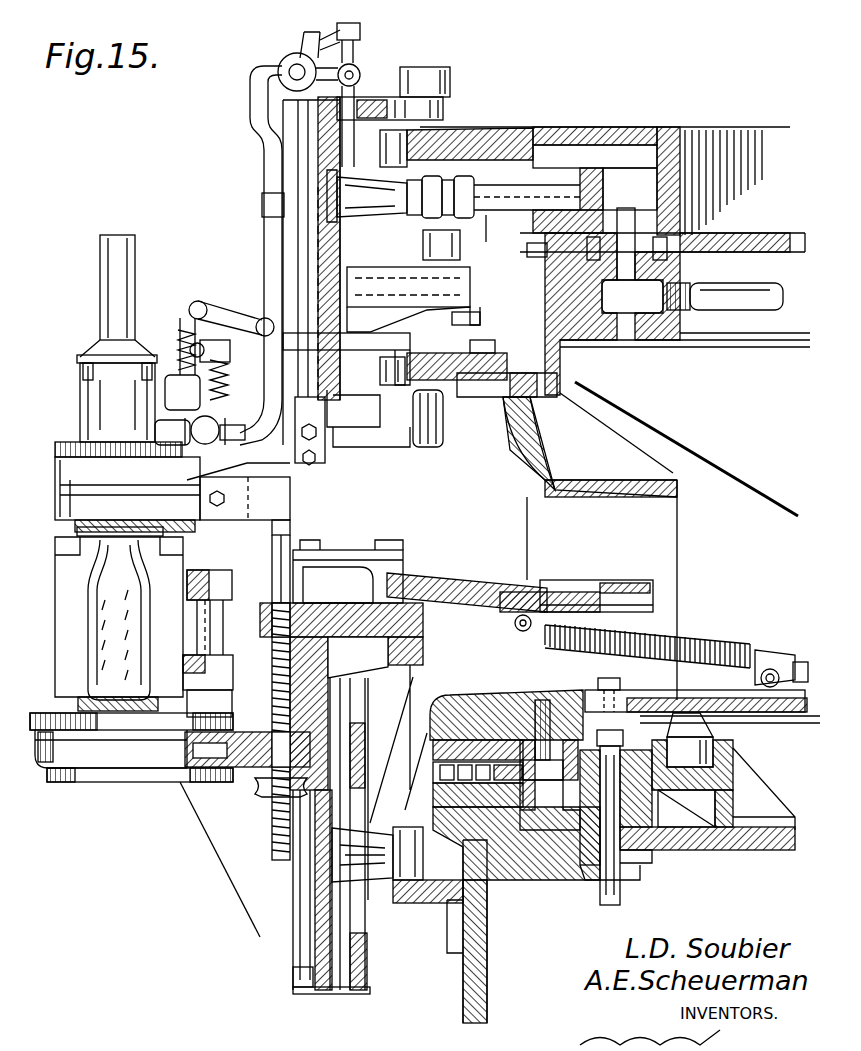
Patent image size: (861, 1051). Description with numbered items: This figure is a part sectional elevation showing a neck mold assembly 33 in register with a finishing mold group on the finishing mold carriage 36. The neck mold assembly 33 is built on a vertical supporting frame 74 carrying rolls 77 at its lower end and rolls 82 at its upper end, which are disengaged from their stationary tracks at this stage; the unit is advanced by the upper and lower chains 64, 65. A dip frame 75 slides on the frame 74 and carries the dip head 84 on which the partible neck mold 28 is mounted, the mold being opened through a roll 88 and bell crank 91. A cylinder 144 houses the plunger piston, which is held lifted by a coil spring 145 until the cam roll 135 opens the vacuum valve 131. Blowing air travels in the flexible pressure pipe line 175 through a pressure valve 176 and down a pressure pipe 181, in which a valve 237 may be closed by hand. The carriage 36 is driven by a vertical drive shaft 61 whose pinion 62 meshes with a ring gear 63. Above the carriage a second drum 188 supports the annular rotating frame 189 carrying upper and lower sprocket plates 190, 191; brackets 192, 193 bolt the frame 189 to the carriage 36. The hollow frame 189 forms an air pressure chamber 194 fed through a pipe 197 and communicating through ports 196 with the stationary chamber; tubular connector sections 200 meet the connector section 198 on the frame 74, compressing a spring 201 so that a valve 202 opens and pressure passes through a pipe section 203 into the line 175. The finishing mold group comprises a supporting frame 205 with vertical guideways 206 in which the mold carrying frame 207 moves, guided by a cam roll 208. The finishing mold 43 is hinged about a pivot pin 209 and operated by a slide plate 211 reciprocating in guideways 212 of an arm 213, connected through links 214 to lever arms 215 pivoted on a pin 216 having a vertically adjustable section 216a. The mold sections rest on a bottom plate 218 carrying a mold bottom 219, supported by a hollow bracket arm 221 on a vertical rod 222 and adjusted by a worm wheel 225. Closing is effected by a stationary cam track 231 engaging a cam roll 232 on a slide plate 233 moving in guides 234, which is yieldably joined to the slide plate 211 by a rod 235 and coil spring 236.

The pressure valve 176 is at (290, 60).
The pressure pipe line 175 is at (352, 66).
The rolls 82 is at (447, 70).
The pipe section 203 is at (390, 99).
The upper sprocket plate 190 is at (447, 128).
The annular rotating frame 189 is at (560, 126).
The annular air pressure chamber 194 is at (635, 160).
The valve 202 is at (595, 177).
The ports 196 is at (626, 225).
The dip frame 75 is at (280, 142).
The upper chain 64 is at (381, 148).
The pressure pipe 181 is at (278, 173).
The supporting frame 74 is at (322, 236).
The connector section 198 is at (383, 205).
The tubular connector sections 200 is at (460, 212).
The roll 88 is at (413, 281).
The spring 201 is at (513, 238).
The neck mold assembly 33 is at (274, 274).
The cam roll 135 is at (478, 322).
The bracket 193 is at (580, 312).
The lower sprocket plate 191 is at (440, 355).
The lower chain 65 is at (392, 372).
The rolls 77 is at (440, 445).
The pipe 197 is at (740, 300).
The second drum 188 is at (775, 488).
The bracket 192 is at (655, 533).
The coil spring 145 is at (115, 310).
The vacuum valve 131 is at (170, 372).
The bell crank 91 is at (232, 313).
The cylinder 144 is at (100, 400).
The valve 237 is at (225, 410).
The dip head 84 is at (80, 470).
The neck mold 28 is at (78, 530).
The finishing mold 43 is at (67, 585).
The pin 216 is at (280, 560).
The vertically adjustable section 216a is at (300, 530).
The lever arms 215 is at (333, 582).
The links 214 is at (345, 560).
The slide plate 211 is at (480, 592).
The arm 213 is at (515, 598).
The guideways 212 is at (570, 598).
The pivot pin 209 is at (245, 632).
The mold bottom 219 is at (85, 700).
The bottom plate 218 is at (40, 713).
The supporting frame 205 is at (365, 730).
The finishing mold carriage 36 is at (494, 678).
The guides 234 is at (600, 690).
The slide plate 233 is at (710, 695).
The rod 235 is at (705, 645).
The coil spring 236 is at (720, 655).
The stationary cam track 231 is at (770, 750).
The cam roll 232 is at (740, 760).
The ring gear 63 is at (543, 748).
The pinion 62 is at (578, 790).
The vertical drive shaft 61 is at (600, 885).
The hollow bracket arm 221 is at (250, 770).
The worm wheel 225 is at (262, 800).
The vertical rod 222 is at (270, 830).
The mold carrying frame 207 is at (300, 910).
The cam roll 208 is at (408, 875).
The vertical guideways 206 is at (325, 985).